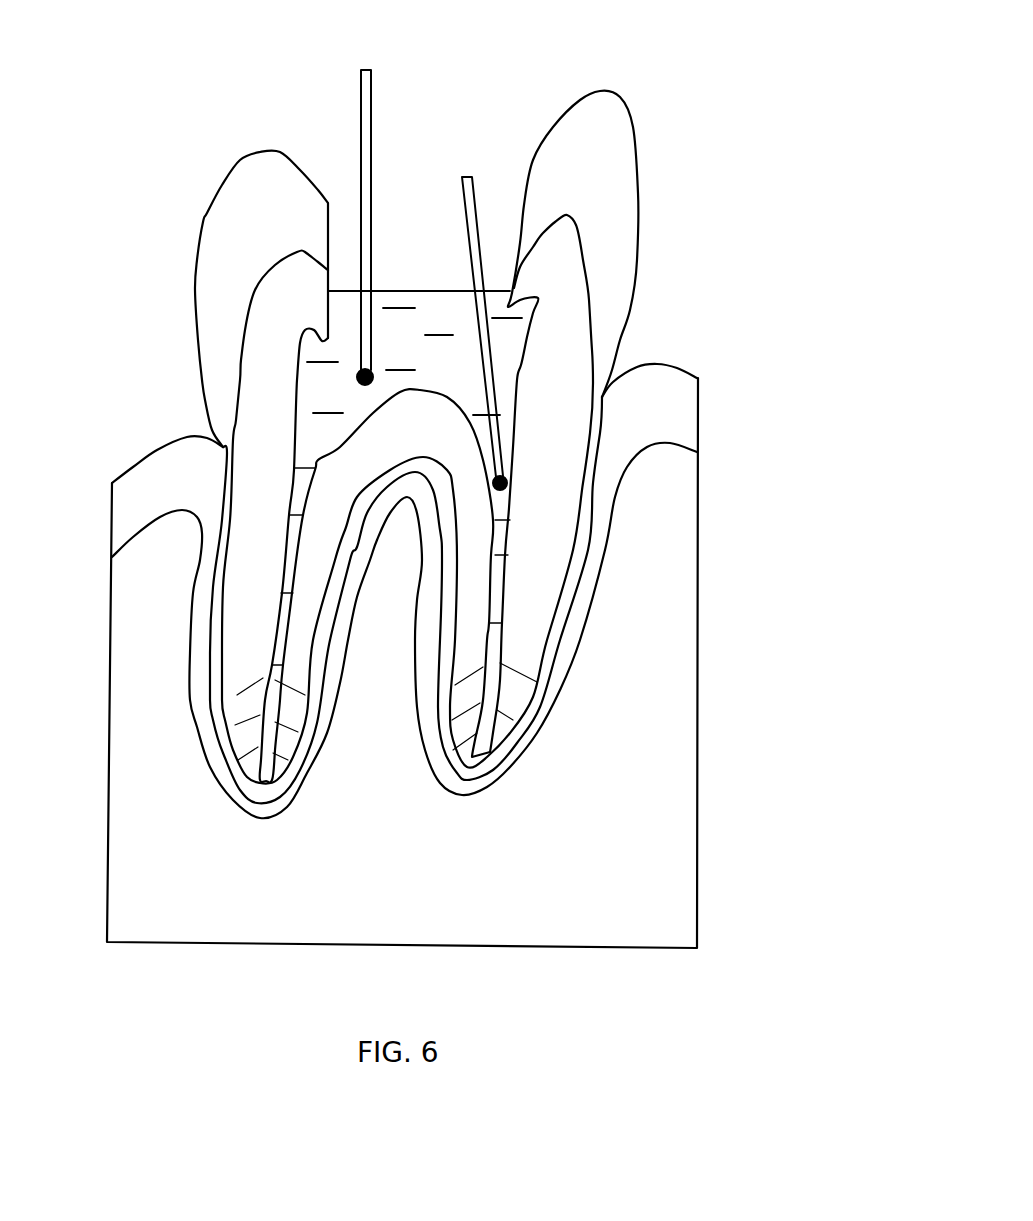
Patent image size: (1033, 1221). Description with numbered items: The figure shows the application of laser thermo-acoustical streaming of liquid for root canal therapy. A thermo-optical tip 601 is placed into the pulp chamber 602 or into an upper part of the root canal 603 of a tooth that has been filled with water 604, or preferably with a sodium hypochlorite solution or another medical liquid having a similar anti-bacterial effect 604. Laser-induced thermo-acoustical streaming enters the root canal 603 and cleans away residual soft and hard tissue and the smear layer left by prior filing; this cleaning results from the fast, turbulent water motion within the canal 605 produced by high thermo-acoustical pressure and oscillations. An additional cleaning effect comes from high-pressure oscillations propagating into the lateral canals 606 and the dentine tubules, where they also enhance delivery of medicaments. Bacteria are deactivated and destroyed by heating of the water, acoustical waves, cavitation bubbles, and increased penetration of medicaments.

The thermo-optical tip 601 is at (393, 118).
The pulp chamber 602 is at (514, 270).
The root canal 603 is at (521, 415).
The water 604 is at (629, 152).
The canal 605 is at (511, 592).
The lateral canals 606 is at (527, 662).